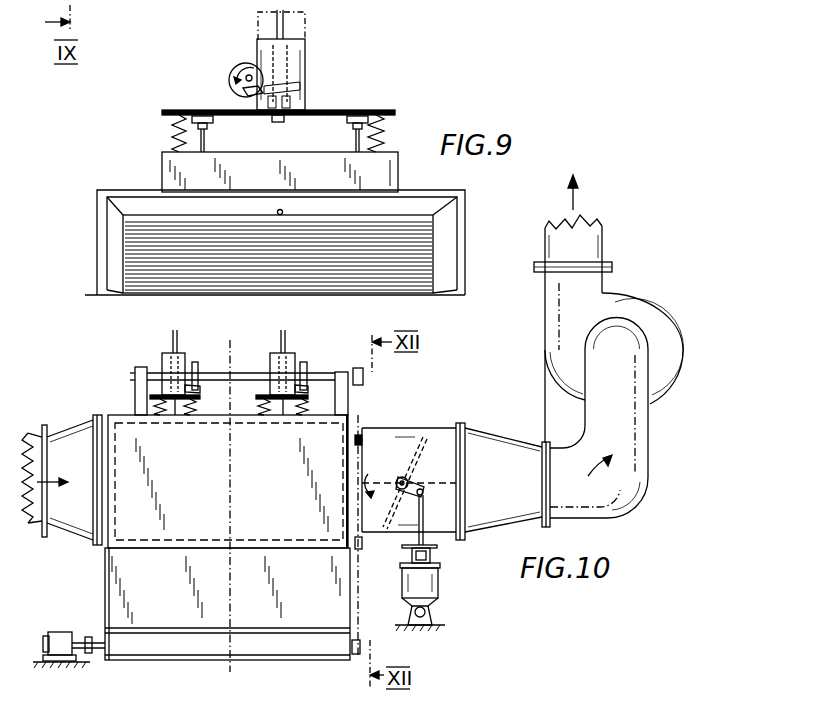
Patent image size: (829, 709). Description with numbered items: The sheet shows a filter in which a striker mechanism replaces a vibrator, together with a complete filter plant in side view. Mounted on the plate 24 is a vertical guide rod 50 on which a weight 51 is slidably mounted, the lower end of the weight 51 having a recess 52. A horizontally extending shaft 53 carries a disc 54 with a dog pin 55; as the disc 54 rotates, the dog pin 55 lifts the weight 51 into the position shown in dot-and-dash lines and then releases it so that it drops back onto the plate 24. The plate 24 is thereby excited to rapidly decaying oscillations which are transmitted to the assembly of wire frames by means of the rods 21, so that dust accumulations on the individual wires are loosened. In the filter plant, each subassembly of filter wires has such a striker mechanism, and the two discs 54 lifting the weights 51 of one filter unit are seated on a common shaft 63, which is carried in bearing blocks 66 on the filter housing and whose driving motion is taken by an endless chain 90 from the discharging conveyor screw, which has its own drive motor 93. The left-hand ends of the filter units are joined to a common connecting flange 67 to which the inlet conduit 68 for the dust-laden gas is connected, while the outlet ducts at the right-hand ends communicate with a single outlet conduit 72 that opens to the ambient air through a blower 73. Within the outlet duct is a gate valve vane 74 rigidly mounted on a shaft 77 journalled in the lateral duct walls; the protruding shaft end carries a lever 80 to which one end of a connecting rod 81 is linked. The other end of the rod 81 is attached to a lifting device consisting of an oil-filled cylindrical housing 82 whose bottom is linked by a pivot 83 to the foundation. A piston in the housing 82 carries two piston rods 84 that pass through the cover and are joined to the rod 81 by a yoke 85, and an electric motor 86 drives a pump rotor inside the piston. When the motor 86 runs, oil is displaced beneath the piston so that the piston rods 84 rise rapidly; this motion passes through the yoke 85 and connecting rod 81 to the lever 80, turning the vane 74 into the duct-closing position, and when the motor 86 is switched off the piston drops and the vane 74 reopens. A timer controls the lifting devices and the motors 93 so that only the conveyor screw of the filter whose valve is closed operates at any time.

In FIG. 9, the rods 21 is at (355, 135).
In FIG. 9, the plate 24 is at (346, 111).
In FIG. 10, the plate 24 is at (199, 402).
In FIG. 9, the vertical guide rod 50 is at (287, 28).
In FIG. 10, the vertical guide rod 50 is at (178, 334).
In FIG. 9, the weight 51 is at (305, 55).
In FIG. 10, the weight 51 is at (165, 356).
In FIG. 9, the recess 52 is at (300, 90).
In FIG. 9, the shaft 53 is at (258, 62).
In FIG. 9, the disc 54 is at (232, 71).
In FIG. 10, the disc 54 is at (199, 365).
In FIG. 9, the dog pin 55 is at (240, 92).
In FIG. 10, the dog pin 55 is at (200, 390).
In FIG. 10, the common shaft 63 is at (250, 373).
In FIG. 10, the bearing block 66 is at (138, 390).
In FIG. 10, the common connecting flange 67 is at (105, 413).
In FIG. 10, the inlet conduit 68 is at (31, 526).
In FIG. 10, the outlet conduit 72 is at (585, 425).
In FIG. 10, the blower 73 is at (547, 352).
In FIG. 10, the vane 74 is at (437, 477).
In FIG. 10, the shaft 77 is at (401, 476).
In FIG. 10, the lever 80 is at (397, 494).
In FIG. 10, the connecting rod 81 is at (424, 508).
In FIG. 10, the cylindrical housing 82 is at (424, 590).
In FIG. 10, the pivot 83 is at (431, 611).
In FIG. 10, the piston rods 84 is at (439, 566).
In FIG. 10, the yoke 85 is at (437, 547).
In FIG. 10, the electric motor 86 is at (412, 553).
In FIG. 10, the endless chain 90 is at (359, 598).
In FIG. 10, the drive motor 93 is at (62, 632).